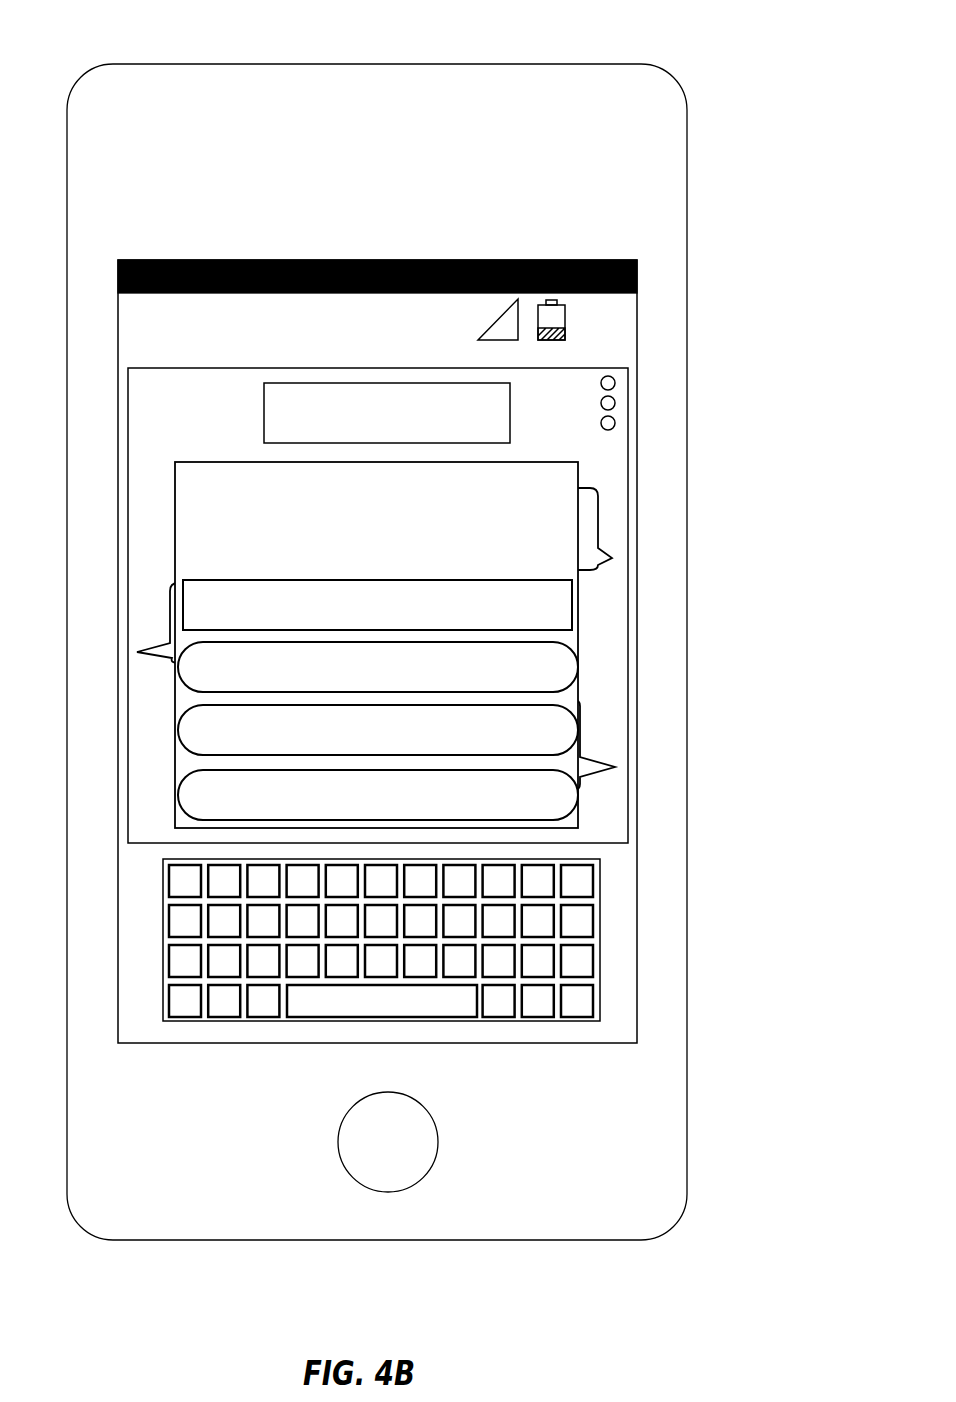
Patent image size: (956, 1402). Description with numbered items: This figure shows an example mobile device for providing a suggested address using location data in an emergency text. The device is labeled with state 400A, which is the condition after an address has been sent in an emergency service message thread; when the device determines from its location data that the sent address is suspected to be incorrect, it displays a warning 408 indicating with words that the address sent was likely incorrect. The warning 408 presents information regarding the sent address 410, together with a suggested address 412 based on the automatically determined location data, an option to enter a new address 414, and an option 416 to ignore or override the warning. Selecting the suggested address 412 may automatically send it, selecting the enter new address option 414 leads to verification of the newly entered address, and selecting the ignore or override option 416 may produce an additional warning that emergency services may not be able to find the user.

The state of the mobile device 400A is at (692, 46).
The warning 408 is at (226, 462).
The sent address 410 is at (260, 580).
The suggested address 412 is at (570, 692).
The enter new address option 414 is at (178, 733).
The ignore or override option 416 is at (178, 806).